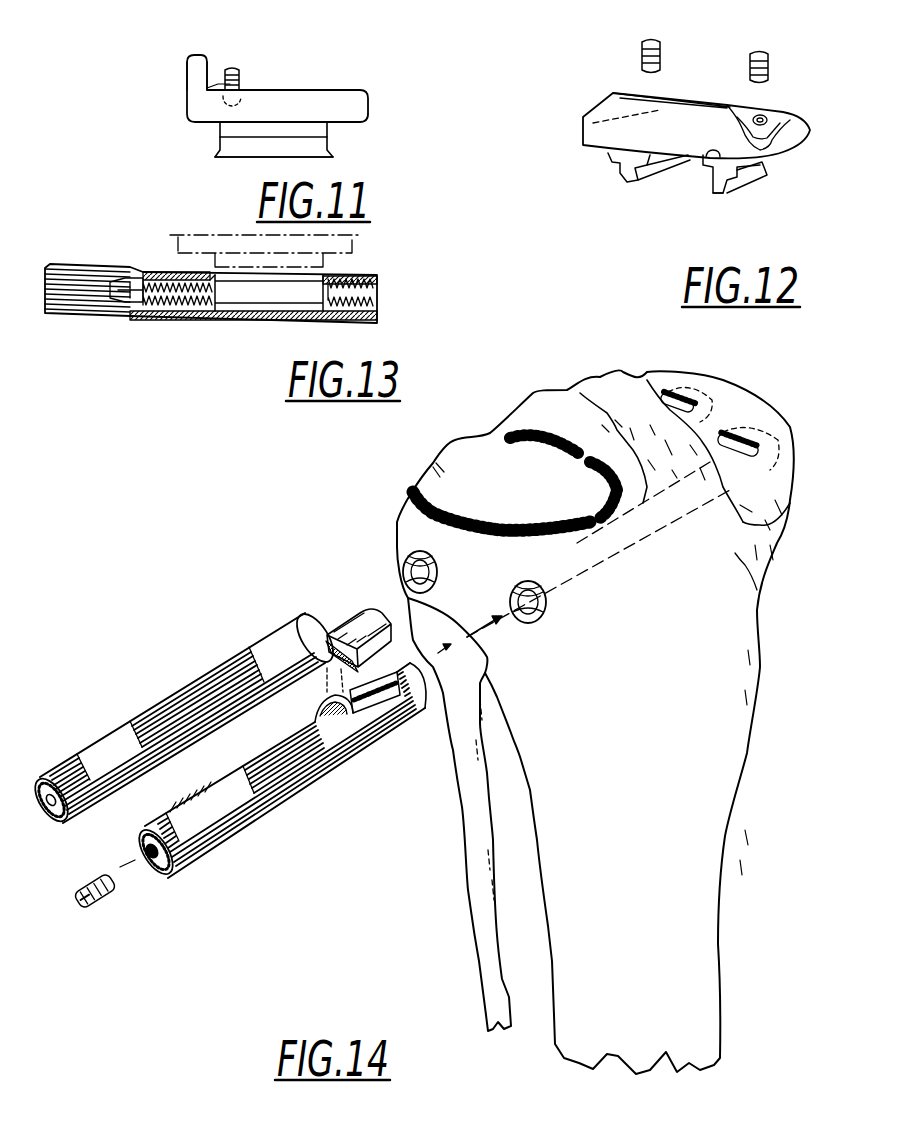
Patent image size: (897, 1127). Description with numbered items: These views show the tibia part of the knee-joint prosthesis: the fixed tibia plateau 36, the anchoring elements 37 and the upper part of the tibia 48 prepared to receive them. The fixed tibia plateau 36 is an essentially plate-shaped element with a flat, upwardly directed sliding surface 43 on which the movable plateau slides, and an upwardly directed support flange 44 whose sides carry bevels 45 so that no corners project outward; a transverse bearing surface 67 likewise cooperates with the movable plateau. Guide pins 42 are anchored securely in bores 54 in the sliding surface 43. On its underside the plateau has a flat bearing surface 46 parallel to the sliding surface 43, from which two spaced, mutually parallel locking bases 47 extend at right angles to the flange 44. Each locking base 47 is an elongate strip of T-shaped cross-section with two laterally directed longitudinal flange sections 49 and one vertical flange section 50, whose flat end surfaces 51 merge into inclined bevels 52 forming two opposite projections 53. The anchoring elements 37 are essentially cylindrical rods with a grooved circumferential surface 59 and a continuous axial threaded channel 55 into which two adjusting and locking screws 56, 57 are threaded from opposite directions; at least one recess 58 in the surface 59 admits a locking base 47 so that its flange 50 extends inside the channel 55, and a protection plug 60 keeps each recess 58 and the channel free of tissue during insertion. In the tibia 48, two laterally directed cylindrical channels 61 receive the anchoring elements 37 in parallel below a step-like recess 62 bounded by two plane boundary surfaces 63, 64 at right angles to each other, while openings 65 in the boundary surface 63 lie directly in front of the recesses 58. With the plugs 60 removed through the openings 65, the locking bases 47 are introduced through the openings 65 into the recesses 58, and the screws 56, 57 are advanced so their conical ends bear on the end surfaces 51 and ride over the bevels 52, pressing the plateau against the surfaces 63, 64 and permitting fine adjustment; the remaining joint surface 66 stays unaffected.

In FIG. 11, the fixed tibia plateau 36 is at (375, 97).
In FIG. 12, the fixed tibia plateau 36 is at (806, 131).
In FIG. 13, the anchoring elements 37 is at (115, 317).
In FIG. 14, the anchoring elements 37 is at (181, 685).
In FIG. 11, the guide pins 42 is at (241, 78).
In FIG. 12, the guide pins 42 is at (749, 56).
In FIG. 11, the sliding surface 43 is at (311, 89).
In FIG. 11, the support flange 44 is at (190, 77).
In FIG. 12, the bevels 45 is at (793, 117).
In FIG. 11, the bearing surface 46 is at (357, 125).
In FIG. 12, the locking bases 47 is at (609, 165).
In FIG. 13, the locking bases 47 is at (263, 310).
In FIG. 14, the tibia 48 is at (755, 624).
In FIG. 12, the laterally directed longitudinal flange sections 49 is at (697, 160).
In FIG. 12, the vertical flange section 50 is at (752, 183).
In FIG. 11, the flat end surfaces 51 is at (219, 128).
In FIG. 12, the flat end surfaces 51 is at (712, 173).
In FIG. 11, the inclined bevels 52 is at (217, 150).
In FIG. 12, the inclined bevels 52 is at (716, 196).
In FIG. 11, the projections 53 is at (219, 158).
In FIG. 12, the projections 53 is at (731, 198).
In FIG. 12, the bores 54 is at (768, 116).
In FIG. 13, the threaded channel 55 is at (125, 287).
In FIG. 14, the threaded channel 55 is at (152, 870).
In FIG. 13, the adjusting and locking screw 56 is at (186, 307).
In FIG. 13, the adjusting and locking screw 57 is at (378, 295).
In FIG. 14, the recess 58 is at (330, 740).
In FIG. 14, the grooved circumferential surface 59 is at (352, 749).
In FIG. 14, the protection plug 60 is at (365, 608).
In FIG. 14, the channel 61 is at (539, 624).
In FIG. 14, the step-like recess 62 is at (740, 425).
In FIG. 14, the boundary surface 63 is at (775, 418).
In FIG. 14, the boundary surface 64 is at (718, 422).
In FIG. 14, the openings 65 is at (758, 454).
In FIG. 14, the joint surface 66 is at (543, 423).
In FIG. 11, the transverse bearing surface 67 is at (212, 63).